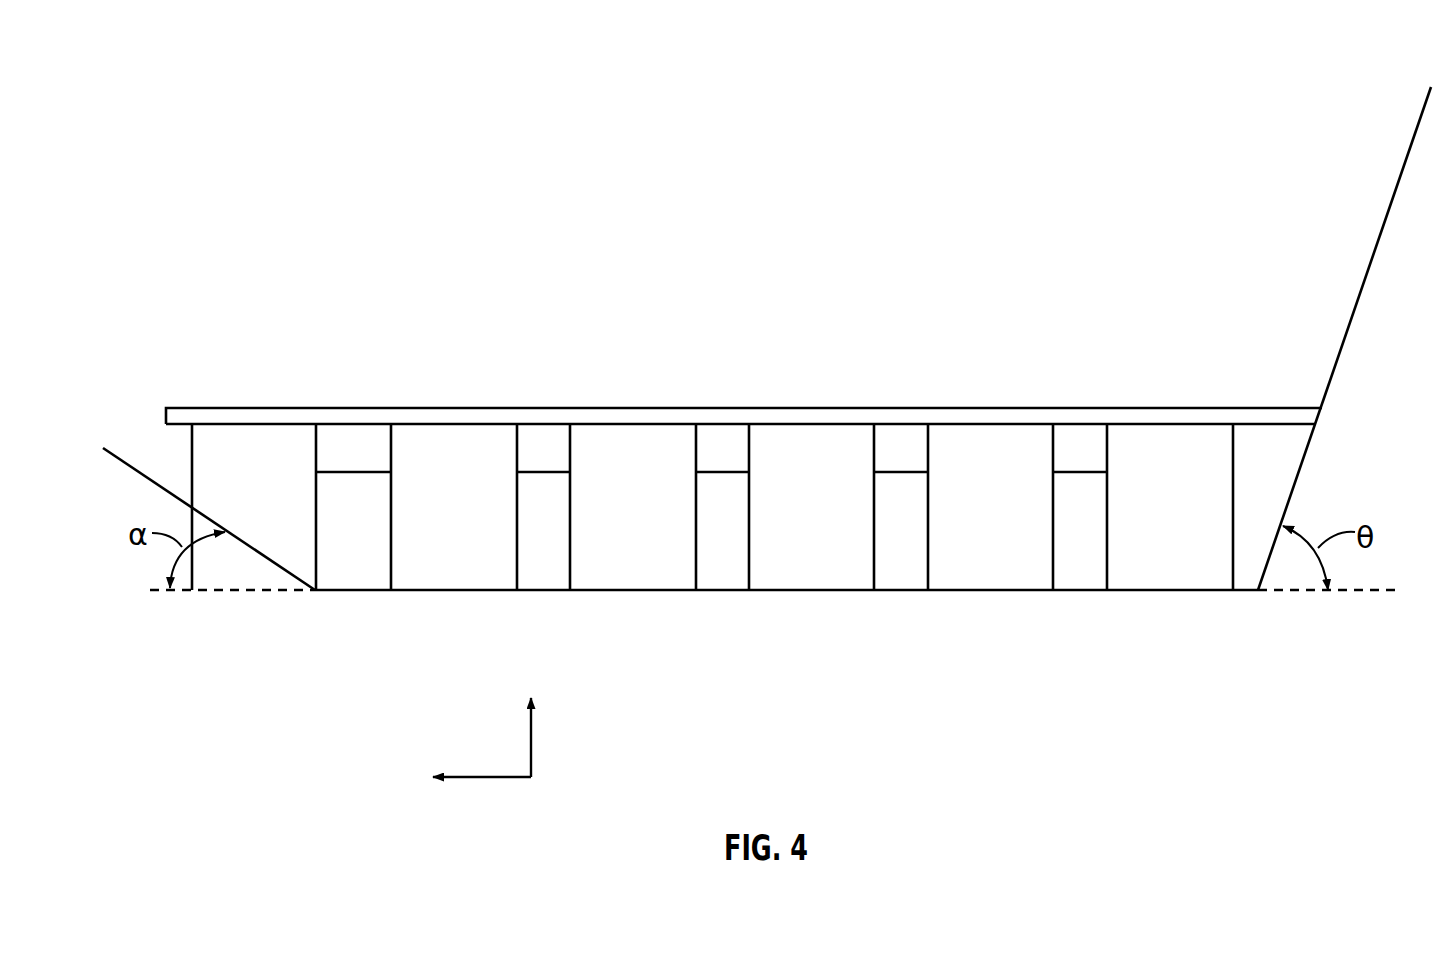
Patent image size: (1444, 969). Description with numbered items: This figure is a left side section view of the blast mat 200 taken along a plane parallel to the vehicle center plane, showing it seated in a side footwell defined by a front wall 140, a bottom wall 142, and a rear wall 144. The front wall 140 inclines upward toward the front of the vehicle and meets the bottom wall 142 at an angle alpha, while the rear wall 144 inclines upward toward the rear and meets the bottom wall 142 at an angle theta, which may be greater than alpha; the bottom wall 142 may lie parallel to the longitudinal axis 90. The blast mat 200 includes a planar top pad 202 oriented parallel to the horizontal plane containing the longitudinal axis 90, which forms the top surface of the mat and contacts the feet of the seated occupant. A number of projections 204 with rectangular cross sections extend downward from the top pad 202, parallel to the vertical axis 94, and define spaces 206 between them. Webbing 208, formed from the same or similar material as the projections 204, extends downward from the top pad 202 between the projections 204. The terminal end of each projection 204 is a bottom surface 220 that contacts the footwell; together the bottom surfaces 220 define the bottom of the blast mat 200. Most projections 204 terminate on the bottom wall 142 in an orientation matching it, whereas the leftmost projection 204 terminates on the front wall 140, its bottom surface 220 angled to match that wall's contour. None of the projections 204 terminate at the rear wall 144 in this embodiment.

The blast mat 200 is at (200, 302).
The top pad 202 is at (467, 408).
The projections 204 is at (276, 482).
The spaces 206 is at (340, 568).
The webbing 208 is at (377, 462).
The bottom surface 220 is at (238, 540).
The front wall 140 is at (141, 473).
The bottom wall 142 is at (374, 593).
The rear wall 144 is at (1380, 233).
The longitudinal axis 90 is at (468, 777).
The vertical axis 94 is at (532, 737).